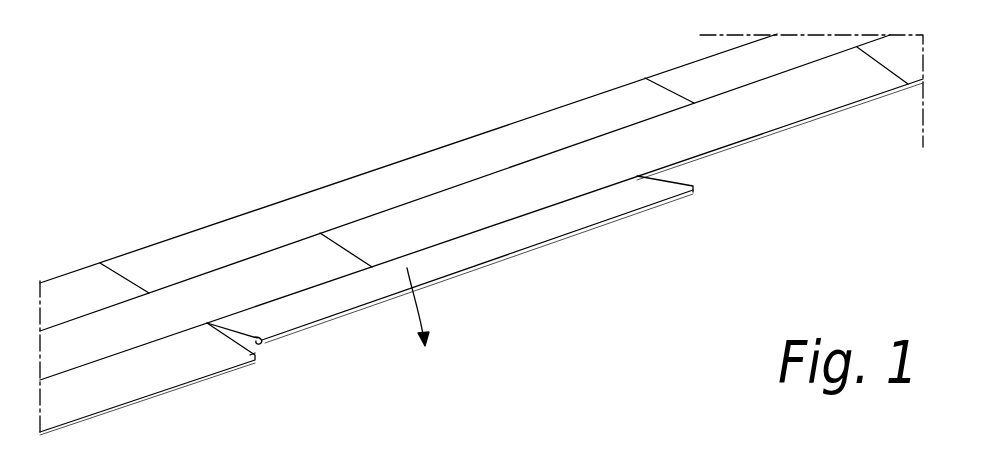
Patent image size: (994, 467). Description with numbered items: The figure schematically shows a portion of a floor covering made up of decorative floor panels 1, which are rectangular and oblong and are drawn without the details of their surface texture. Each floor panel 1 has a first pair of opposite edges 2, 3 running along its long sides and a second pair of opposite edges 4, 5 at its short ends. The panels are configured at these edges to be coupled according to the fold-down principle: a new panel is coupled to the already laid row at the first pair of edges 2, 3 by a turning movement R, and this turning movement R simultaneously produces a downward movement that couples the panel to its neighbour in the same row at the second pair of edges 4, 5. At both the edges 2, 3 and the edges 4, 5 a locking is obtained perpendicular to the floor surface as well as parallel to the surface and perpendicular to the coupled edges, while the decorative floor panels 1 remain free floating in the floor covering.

The decorative floor panel 1 is at (370, 192).
The first pair of opposite edges 2 is at (192, 230).
The first pair of opposite edges 3 is at (717, 143).
The second pair of opposite edges 4 is at (673, 183).
The second pair of opposite edges 5 is at (259, 341).
The turning movement R is at (418, 294).